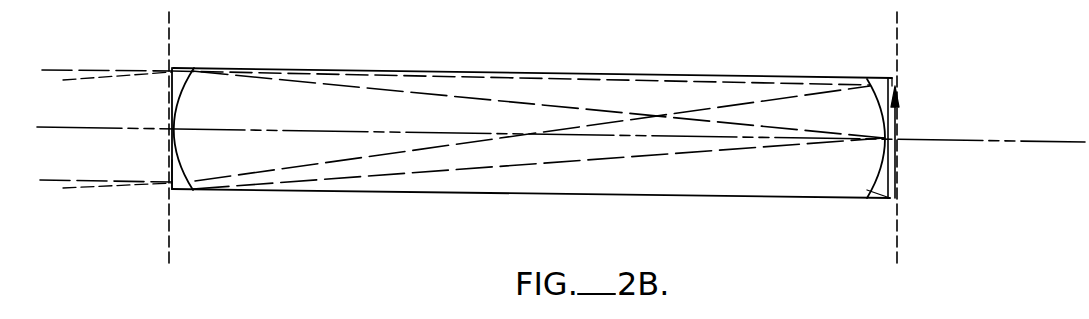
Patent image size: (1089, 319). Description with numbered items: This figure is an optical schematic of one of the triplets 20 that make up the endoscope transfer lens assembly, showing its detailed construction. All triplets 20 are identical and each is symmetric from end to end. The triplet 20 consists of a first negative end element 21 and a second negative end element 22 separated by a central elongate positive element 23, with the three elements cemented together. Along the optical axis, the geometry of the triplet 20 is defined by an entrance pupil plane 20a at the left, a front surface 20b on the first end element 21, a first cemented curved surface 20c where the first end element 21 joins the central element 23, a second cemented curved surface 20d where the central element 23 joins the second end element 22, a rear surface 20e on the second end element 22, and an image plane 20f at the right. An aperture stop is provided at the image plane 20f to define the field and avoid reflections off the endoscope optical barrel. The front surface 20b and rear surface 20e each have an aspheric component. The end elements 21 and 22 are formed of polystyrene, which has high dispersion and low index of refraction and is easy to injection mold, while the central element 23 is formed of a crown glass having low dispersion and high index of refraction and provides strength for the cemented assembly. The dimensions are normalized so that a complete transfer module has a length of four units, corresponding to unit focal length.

The triplet 20 is at (493, 72).
The entrance pupil plane 20a is at (236, 276).
The front surface 20b is at (184, 172).
The first cemented curved surface 20c is at (174, 184).
The second cemented curved surface 20d is at (866, 191).
The rear surface 20e is at (957, 212).
The image plane 20f is at (954, 269).
The first negative end element 21 is at (181, 80).
The second negative end element 22 is at (880, 86).
The central elongate positive element 23 is at (567, 84).